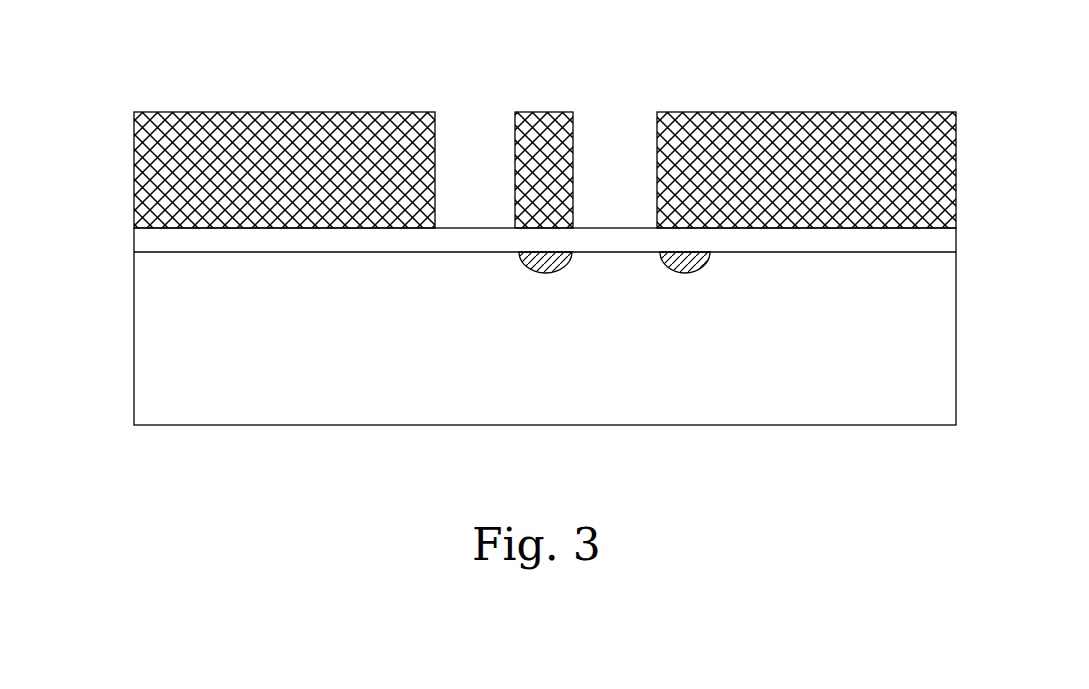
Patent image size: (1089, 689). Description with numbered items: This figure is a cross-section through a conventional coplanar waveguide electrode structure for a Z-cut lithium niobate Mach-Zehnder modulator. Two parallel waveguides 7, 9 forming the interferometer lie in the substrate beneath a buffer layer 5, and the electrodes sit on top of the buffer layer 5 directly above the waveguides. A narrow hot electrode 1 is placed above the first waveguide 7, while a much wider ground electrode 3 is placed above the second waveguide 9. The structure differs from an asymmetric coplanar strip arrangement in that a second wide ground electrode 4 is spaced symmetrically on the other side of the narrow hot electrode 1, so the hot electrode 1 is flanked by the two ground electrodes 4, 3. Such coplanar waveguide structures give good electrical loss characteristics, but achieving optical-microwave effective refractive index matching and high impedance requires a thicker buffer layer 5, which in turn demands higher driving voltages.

The hot electrode 1 is at (516, 122).
The ground electrode 3 is at (848, 122).
The second wide ground electrode 4 is at (289, 120).
The buffer layer 5 is at (940, 245).
The waveguide 7 is at (527, 275).
The waveguide 9 is at (662, 270).